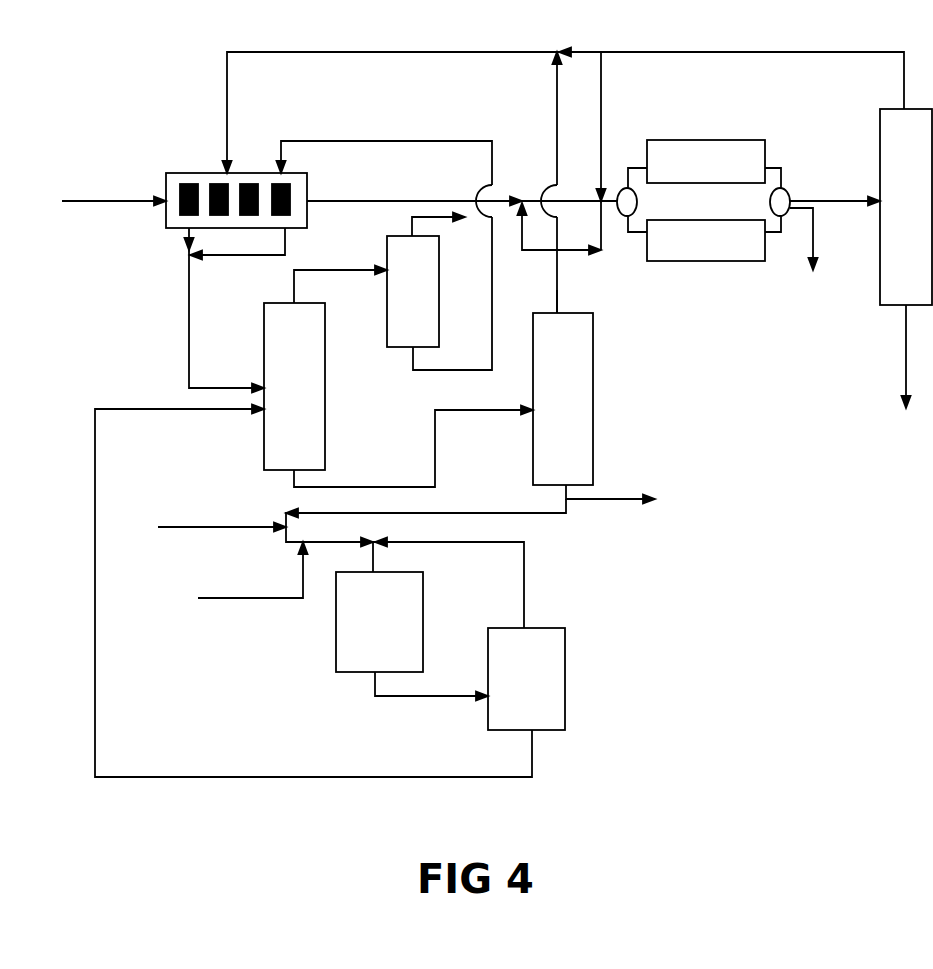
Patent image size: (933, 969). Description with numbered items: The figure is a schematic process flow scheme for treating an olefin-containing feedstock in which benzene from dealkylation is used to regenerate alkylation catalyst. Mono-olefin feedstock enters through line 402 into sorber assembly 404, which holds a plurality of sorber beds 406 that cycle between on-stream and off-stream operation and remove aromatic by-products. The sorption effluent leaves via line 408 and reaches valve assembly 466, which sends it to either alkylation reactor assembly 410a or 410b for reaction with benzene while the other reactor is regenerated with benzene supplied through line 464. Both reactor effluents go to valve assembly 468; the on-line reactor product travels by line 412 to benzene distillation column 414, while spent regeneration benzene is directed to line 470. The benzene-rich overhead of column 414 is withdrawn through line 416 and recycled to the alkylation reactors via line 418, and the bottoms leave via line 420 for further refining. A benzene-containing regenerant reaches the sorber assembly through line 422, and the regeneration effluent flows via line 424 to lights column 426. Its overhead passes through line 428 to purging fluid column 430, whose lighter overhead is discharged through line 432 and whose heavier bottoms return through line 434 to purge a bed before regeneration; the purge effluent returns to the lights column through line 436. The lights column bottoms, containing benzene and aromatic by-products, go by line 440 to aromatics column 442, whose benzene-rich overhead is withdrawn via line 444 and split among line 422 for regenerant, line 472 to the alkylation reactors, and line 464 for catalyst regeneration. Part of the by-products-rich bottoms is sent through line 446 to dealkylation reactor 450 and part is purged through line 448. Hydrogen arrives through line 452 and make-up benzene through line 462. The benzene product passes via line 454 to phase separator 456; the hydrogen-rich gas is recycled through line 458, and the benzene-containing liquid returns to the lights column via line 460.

The line 402 is at (92, 201).
The sorber assembly 404 is at (182, 173).
The sorber beds 406 is at (183, 207).
The line 408 is at (345, 200).
The alkylation reactor assembly 410a is at (738, 176).
The alkylation reactor assembly 410b is at (738, 257).
The line 412 is at (850, 200).
The benzene distillation column 414 is at (930, 237).
The line 416 is at (703, 52).
The line 418 is at (602, 140).
The line 420 is at (903, 328).
The line 422 is at (362, 52).
The line 424 is at (188, 308).
The lights column 426 is at (318, 387).
The line 428 is at (293, 278).
The purging fluid column 430 is at (435, 301).
The line 432 is at (407, 220).
The line 434 is at (437, 370).
The line 436 is at (263, 255).
The line 440 is at (325, 487).
The aromatics column 442 is at (583, 401).
The line 444 is at (557, 288).
The line 446 is at (540, 515).
The line 448 is at (602, 498).
The dealkylation reactor 450 is at (403, 632).
The line 452 is at (262, 598).
The line 454 is at (400, 698).
The phase separator 456 is at (552, 694).
The line 458 is at (525, 570).
The line 460 is at (533, 740).
The line 462 is at (232, 527).
The line 464 is at (570, 253).
The valve assembly 466 is at (638, 197).
The valve assembly 468 is at (770, 207).
The line 470 is at (810, 245).
The line 472 is at (545, 252).